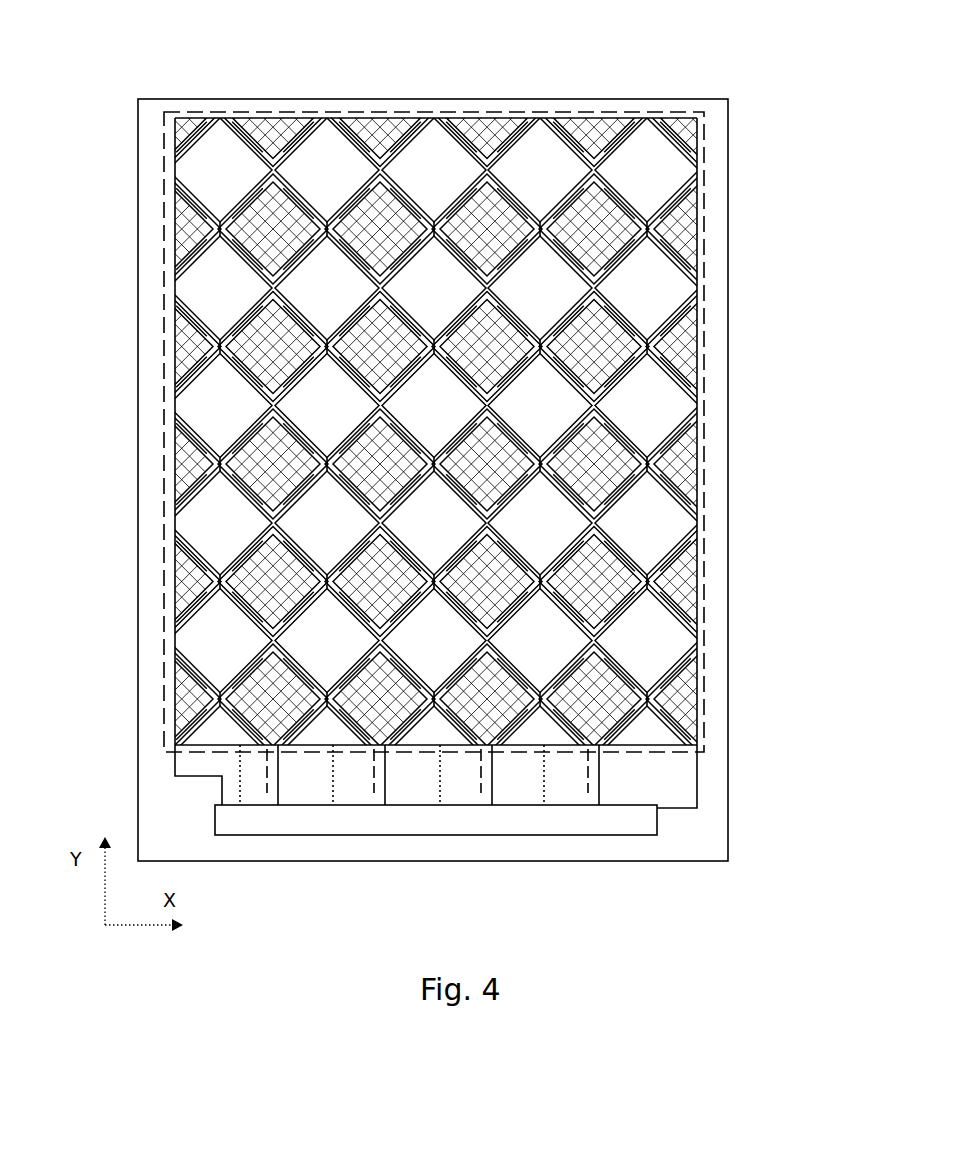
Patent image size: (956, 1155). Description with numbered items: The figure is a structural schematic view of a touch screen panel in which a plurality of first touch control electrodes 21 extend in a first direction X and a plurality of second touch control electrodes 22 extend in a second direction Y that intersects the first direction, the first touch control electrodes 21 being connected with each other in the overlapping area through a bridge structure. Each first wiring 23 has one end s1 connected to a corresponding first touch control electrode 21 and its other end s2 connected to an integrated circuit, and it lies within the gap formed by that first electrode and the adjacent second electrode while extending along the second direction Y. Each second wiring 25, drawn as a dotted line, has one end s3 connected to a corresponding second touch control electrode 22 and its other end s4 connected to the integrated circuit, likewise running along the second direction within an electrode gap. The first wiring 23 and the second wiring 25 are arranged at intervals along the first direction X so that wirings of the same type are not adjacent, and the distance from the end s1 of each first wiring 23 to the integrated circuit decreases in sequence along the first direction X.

The first touch control electrode 21 is at (684, 234).
The second touch control electrode 22 is at (657, 422).
The first wiring 23 is at (174, 264).
The second wiring 25 is at (697, 304).
The one end of first wiring s1 is at (641, 582).
The other end of first wiring s2 is at (417, 777).
The one end of second wiring s3 is at (650, 121).
The other end of second wiring s4 is at (693, 807).